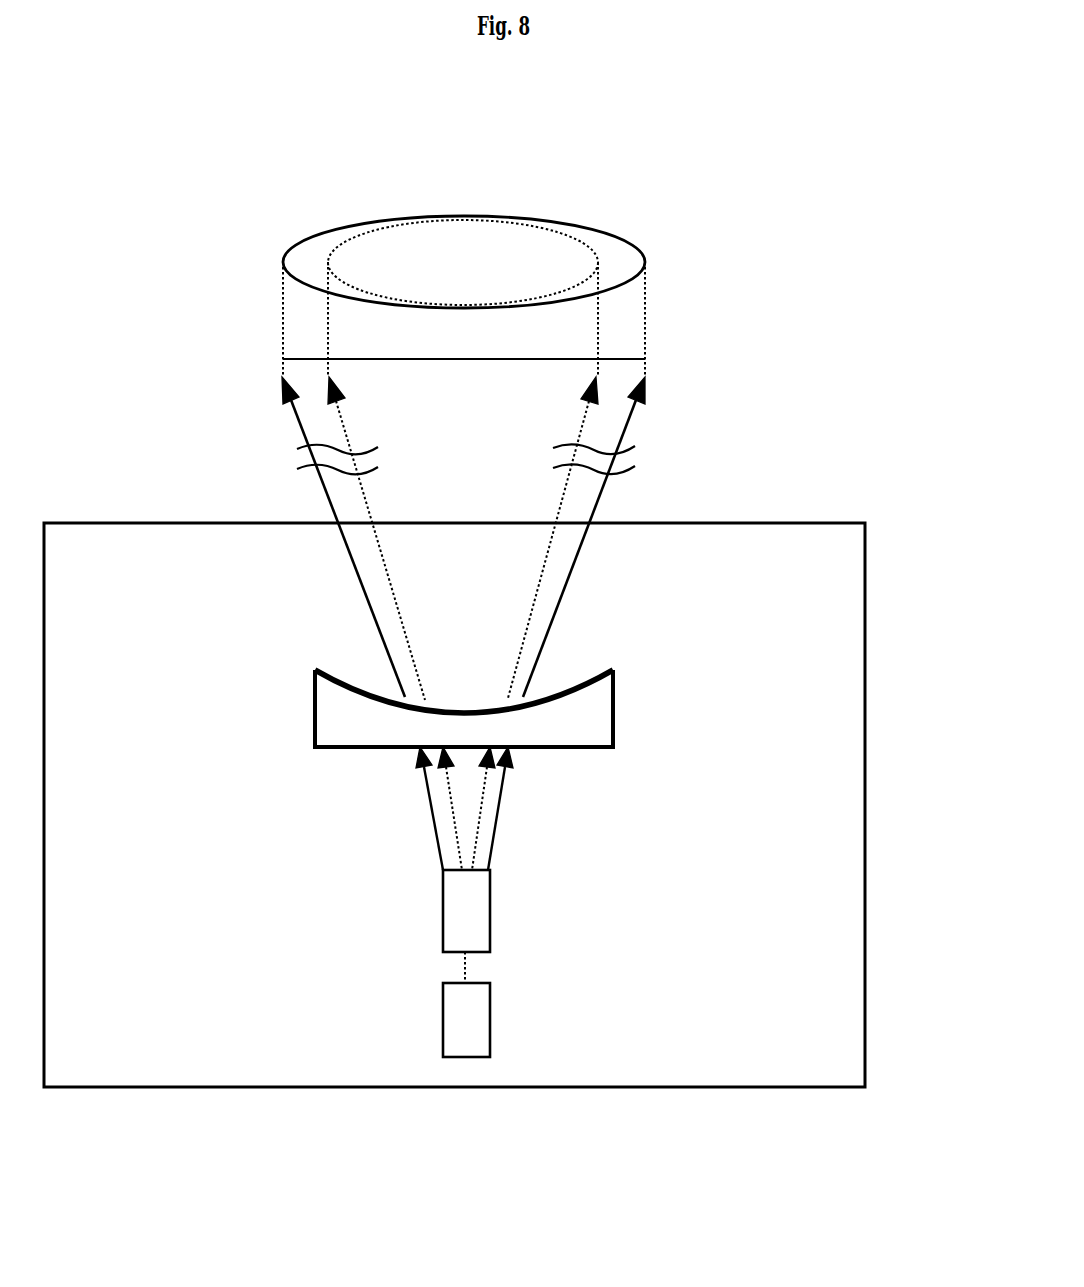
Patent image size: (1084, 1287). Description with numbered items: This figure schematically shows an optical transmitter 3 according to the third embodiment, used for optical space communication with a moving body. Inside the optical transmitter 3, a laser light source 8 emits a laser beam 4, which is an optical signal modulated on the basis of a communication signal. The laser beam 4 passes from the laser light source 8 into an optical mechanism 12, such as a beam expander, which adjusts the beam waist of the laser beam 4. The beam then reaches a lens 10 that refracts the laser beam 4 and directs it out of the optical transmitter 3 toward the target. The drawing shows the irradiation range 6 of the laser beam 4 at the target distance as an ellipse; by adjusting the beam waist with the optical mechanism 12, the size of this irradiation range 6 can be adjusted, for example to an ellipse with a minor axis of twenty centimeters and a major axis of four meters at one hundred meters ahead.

The optical transmitter 3 is at (865, 587).
The laser beam 4 is at (627, 423).
The irradiation range 6 is at (622, 232).
The laser light source 8 is at (490, 1018).
The lens 10 is at (614, 715).
The optical mechanism 12 is at (490, 913).